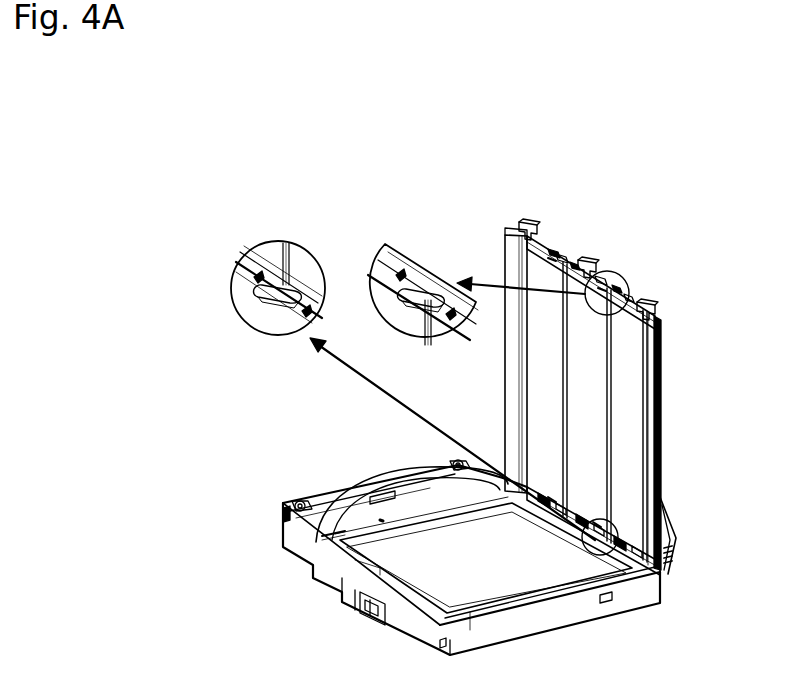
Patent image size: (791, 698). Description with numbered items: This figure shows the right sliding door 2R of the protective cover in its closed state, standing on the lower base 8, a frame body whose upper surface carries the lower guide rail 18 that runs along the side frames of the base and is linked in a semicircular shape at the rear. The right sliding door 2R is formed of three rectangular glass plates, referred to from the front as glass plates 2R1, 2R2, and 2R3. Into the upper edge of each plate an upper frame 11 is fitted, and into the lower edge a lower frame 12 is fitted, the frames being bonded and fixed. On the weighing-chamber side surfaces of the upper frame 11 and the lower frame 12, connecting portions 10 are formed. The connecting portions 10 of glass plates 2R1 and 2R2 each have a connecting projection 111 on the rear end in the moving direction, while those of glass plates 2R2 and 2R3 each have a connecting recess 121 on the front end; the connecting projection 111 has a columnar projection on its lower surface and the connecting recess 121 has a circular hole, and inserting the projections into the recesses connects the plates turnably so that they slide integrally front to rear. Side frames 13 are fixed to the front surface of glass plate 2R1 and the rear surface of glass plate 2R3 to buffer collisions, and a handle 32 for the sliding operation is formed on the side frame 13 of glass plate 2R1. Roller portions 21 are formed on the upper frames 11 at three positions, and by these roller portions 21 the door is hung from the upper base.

The right sliding door 2R is at (600, 382).
The glass plate 2R1 is at (623, 453).
The glass plate 2R2 is at (587, 408).
The glass plate 2R3 is at (547, 372).
The lower base 8 is at (503, 555).
The connecting portion 10 is at (556, 268).
The upper frame 11 is at (550, 250).
The lower frame 12 is at (538, 493).
The side frame 13 is at (517, 390).
The lower guide rail 18 is at (323, 517).
The roller portion 21 is at (531, 222).
The handle 32 is at (672, 543).
The connecting projection 111 is at (274, 287).
The connecting recess 121 is at (265, 300).